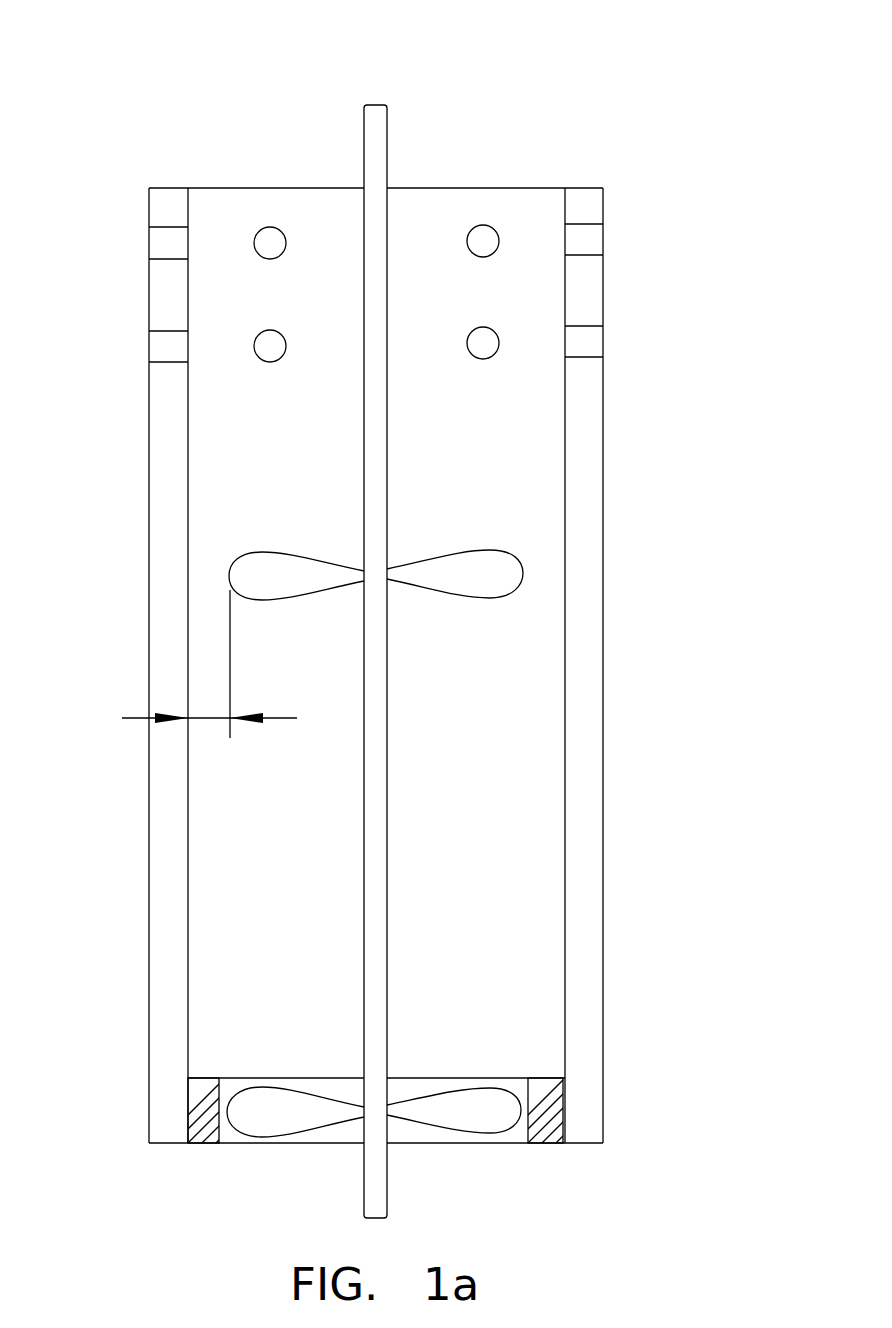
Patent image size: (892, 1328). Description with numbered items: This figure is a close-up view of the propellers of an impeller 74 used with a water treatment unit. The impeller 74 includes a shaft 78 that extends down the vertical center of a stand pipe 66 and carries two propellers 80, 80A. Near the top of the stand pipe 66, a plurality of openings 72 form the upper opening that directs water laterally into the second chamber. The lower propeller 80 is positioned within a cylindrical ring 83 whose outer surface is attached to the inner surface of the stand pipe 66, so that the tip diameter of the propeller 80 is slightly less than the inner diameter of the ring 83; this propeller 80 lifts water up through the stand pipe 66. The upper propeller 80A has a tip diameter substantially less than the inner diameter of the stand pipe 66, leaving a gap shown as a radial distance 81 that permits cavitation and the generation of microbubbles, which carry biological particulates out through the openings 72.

The stand pipe 66 is at (585, 773).
The openings 72 is at (585, 240).
The impeller 74 is at (407, 100).
The shaft 78 is at (373, 710).
The propeller 80 is at (485, 1102).
The propeller 80A is at (502, 573).
The radial distance 81 is at (208, 718).
The cylindrical ring 83 is at (545, 1130).